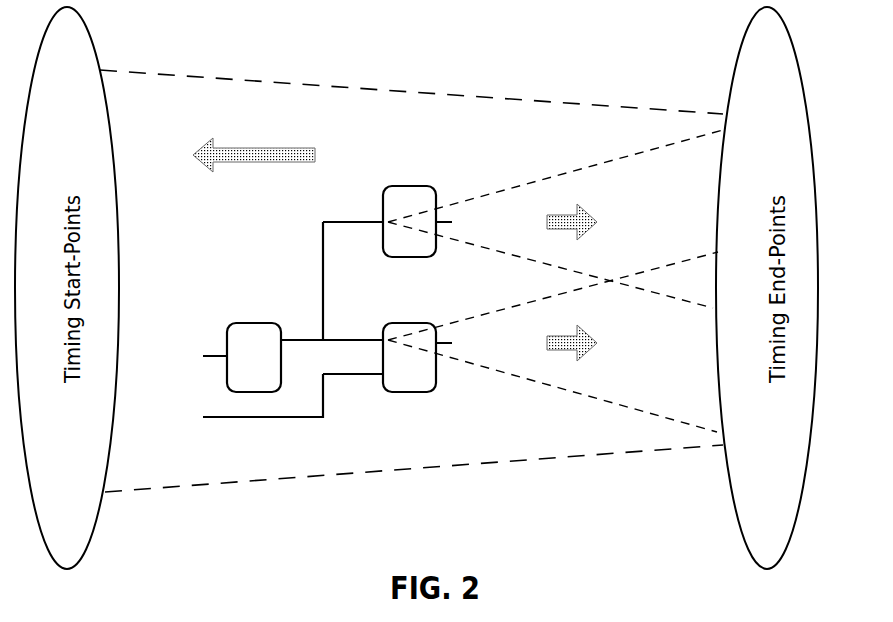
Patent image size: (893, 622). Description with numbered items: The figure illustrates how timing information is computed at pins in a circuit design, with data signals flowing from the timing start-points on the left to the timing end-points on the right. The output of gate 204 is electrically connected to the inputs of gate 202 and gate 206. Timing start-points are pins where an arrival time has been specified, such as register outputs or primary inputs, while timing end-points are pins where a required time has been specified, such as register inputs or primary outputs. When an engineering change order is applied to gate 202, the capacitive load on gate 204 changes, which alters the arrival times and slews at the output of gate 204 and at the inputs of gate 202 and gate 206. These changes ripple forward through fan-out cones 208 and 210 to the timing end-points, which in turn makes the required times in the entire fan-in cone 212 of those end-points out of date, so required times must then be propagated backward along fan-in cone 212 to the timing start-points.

The gate 202 is at (409, 357).
The gate 204 is at (254, 357).
The gate 206 is at (409, 221).
The fan-out cone 208 is at (606, 162).
The fan-out cone 210 is at (600, 397).
The fan-in cone 212 is at (310, 85).